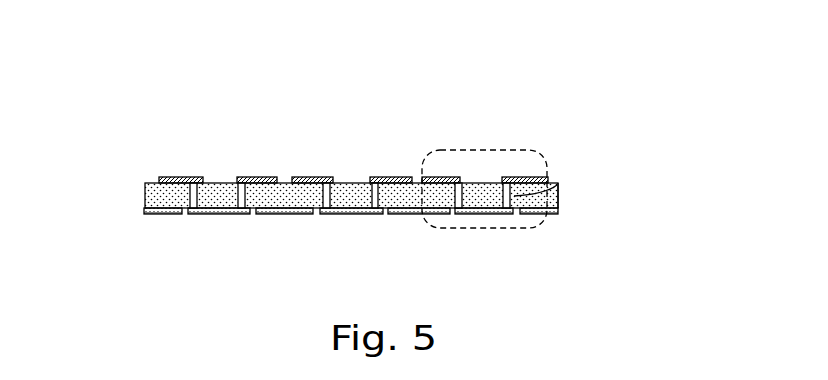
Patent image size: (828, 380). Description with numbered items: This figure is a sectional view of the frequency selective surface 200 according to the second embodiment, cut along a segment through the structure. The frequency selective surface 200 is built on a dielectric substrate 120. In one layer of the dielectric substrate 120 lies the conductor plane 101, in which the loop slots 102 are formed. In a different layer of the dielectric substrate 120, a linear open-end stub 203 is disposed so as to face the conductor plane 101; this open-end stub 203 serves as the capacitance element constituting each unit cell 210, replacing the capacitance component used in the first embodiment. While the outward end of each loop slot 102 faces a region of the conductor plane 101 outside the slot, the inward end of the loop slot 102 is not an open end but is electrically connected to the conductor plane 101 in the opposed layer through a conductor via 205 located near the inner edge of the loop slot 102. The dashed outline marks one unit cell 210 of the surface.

The frequency selective surface 200 is at (84, 57).
The conductor plane 101 is at (158, 213).
The loop slot 102 is at (517, 214).
The dielectric substrate 120 is at (560, 200).
The open-end stub 203 is at (442, 177).
The conductor via 205 is at (558, 183).
The unit cell 210 is at (485, 150).